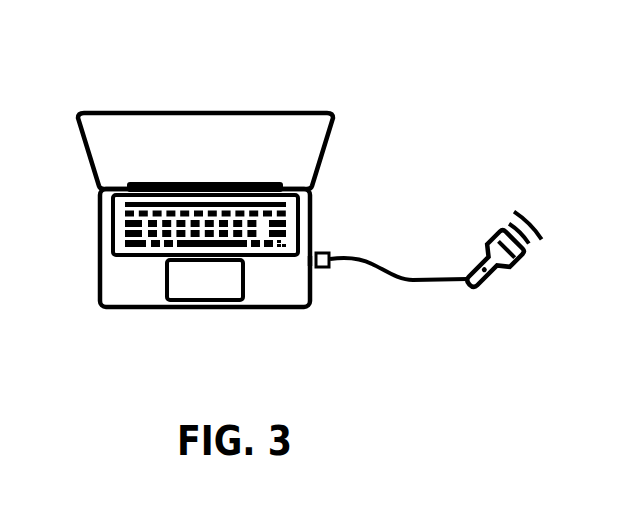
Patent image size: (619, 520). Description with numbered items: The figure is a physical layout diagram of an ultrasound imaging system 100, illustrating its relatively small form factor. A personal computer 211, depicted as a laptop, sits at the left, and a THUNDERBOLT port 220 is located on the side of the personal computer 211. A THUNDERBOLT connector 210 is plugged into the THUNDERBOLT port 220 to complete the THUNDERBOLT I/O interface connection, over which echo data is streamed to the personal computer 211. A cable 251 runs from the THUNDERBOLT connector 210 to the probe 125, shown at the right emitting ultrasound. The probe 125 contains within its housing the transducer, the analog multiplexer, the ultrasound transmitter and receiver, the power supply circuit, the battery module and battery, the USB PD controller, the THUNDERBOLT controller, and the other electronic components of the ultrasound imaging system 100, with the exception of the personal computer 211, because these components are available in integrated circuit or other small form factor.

The ultrasound imaging system 100 is at (375, 70).
The personal computer 211 is at (97, 110).
The THUNDERBOLT port 220 is at (296, 260).
The THUNDERBOLT connector 210 is at (328, 269).
The cable 251 is at (415, 283).
The probe 125 is at (498, 279).